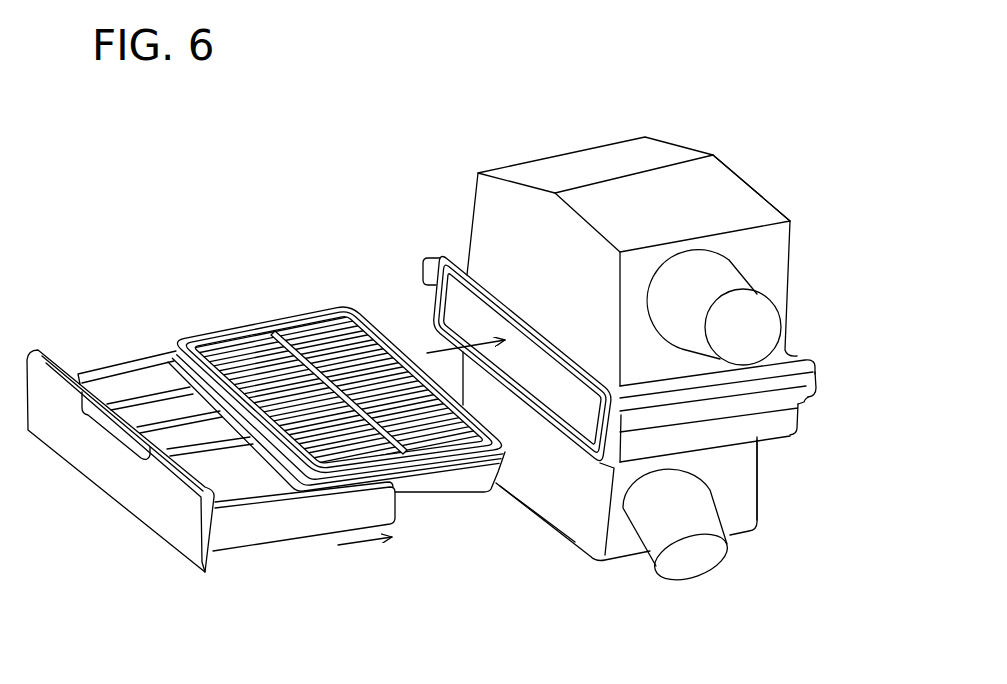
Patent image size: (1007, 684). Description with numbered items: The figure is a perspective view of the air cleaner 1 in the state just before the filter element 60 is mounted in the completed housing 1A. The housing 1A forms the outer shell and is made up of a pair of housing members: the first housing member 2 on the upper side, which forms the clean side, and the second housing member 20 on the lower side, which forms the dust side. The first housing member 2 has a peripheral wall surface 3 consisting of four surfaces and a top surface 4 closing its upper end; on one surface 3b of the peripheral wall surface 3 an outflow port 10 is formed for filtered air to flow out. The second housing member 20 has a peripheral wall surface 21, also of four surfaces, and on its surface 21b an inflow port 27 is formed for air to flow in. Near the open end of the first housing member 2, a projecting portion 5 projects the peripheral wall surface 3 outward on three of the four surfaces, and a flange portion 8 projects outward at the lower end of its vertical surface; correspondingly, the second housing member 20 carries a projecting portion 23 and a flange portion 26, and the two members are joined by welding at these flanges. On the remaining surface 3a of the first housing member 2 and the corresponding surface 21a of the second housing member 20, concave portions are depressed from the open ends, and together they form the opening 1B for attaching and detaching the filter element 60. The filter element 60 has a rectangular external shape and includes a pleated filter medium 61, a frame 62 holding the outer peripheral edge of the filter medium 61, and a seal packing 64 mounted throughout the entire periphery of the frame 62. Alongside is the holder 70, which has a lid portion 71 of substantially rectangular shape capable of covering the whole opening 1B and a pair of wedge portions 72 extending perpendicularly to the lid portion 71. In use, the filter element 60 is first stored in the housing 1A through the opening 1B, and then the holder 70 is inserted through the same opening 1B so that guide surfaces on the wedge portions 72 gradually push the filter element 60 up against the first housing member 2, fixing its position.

The air cleaner 1 is at (316, 92).
The housing 1A is at (585, 165).
The opening 1B is at (538, 392).
The first housing member 2 is at (718, 210).
The peripheral wall surface 3 is at (578, 270).
The surface 3a is at (510, 233).
The surface 3b is at (768, 260).
The top surface 4 is at (660, 157).
The projecting portion 5 is at (802, 335).
The flange portion 8 is at (814, 367).
The outflow port 10 is at (690, 325).
The second housing member 20 is at (746, 488).
The peripheral wall surface 21 is at (542, 490).
The surface 21a is at (567, 510).
The surface 21b is at (733, 513).
The projecting portion 23 is at (802, 421).
The flange portion 26 is at (817, 380).
The inflow port 27 is at (653, 535).
The filter element 60 is at (267, 307).
The filter medium 61 is at (233, 357).
The frame 62 is at (316, 309).
The seal packing 64 is at (418, 477).
The holder 70 is at (117, 472).
The lid portion 71 is at (72, 452).
The wedge portions 72 is at (117, 357).